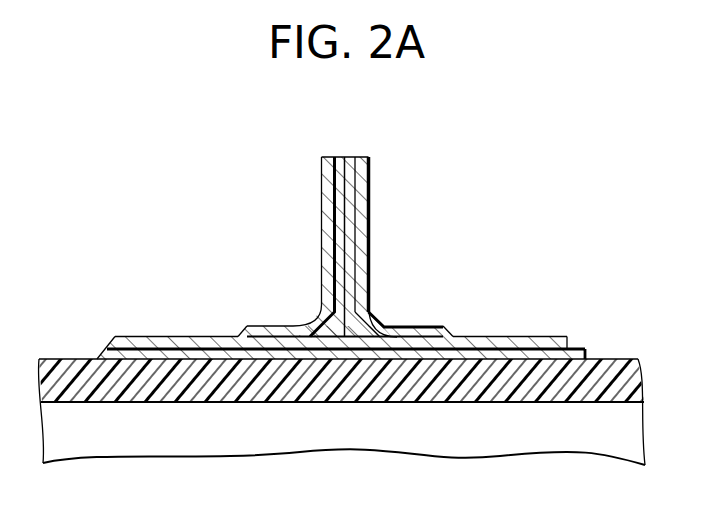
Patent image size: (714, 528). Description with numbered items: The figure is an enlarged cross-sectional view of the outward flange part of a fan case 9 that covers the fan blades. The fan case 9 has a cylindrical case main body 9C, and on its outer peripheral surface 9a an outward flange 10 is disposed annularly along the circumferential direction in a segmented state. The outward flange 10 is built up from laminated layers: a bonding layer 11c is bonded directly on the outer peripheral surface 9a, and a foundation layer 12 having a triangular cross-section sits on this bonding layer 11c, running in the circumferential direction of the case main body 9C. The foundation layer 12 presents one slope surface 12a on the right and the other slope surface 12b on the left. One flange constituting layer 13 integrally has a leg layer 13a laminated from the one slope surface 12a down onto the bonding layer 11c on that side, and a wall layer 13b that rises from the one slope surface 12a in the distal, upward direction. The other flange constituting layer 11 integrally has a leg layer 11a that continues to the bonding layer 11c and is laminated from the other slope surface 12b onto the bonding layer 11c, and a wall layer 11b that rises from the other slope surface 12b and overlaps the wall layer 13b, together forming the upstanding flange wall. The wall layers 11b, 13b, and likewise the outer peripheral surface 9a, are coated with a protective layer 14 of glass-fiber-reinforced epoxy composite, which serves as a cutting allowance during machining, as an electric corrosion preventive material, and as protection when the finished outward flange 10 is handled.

The fan case 9 is at (341, 374).
The case main body 9C is at (53, 354).
The outer peripheral surface 9a is at (611, 359).
The outward flange 10 is at (348, 230).
The other flange constituting layer 11 is at (203, 283).
The leg layer 11a is at (212, 338).
The wall layer 11b is at (274, 294).
The bonding layer 11c is at (163, 353).
The foundation layer 12 is at (411, 406).
The one slope surface 12a is at (392, 332).
The other slope surface 12b is at (289, 352).
The one flange constituting layer 13 is at (470, 289).
The leg layer 13a is at (483, 337).
The wall layer 13b is at (395, 299).
The protective layer 14 is at (322, 197).